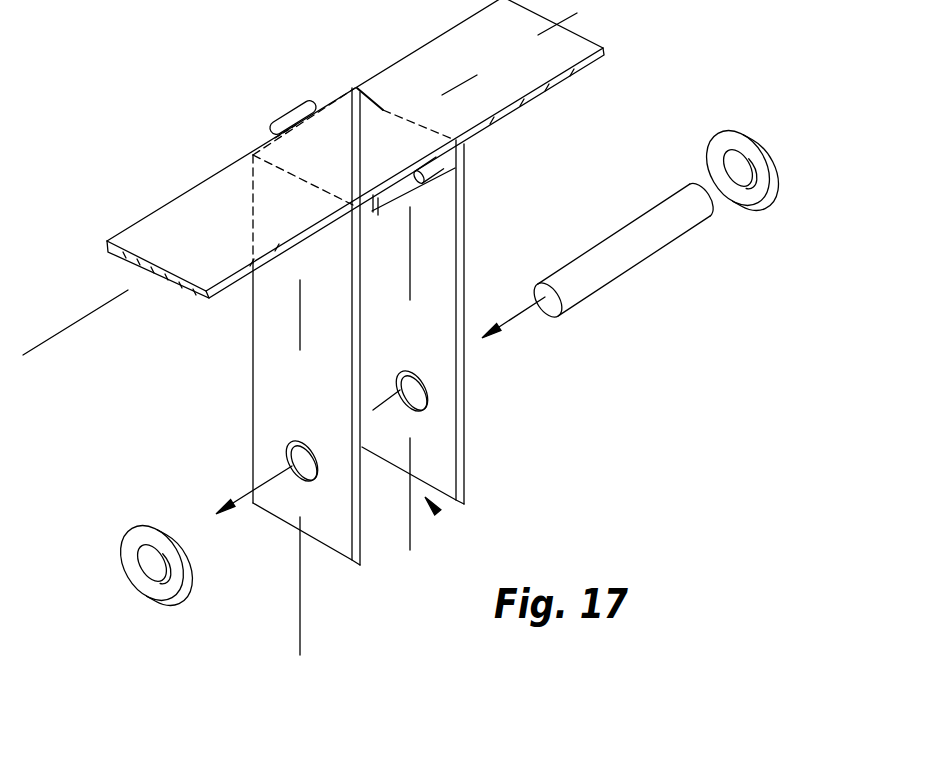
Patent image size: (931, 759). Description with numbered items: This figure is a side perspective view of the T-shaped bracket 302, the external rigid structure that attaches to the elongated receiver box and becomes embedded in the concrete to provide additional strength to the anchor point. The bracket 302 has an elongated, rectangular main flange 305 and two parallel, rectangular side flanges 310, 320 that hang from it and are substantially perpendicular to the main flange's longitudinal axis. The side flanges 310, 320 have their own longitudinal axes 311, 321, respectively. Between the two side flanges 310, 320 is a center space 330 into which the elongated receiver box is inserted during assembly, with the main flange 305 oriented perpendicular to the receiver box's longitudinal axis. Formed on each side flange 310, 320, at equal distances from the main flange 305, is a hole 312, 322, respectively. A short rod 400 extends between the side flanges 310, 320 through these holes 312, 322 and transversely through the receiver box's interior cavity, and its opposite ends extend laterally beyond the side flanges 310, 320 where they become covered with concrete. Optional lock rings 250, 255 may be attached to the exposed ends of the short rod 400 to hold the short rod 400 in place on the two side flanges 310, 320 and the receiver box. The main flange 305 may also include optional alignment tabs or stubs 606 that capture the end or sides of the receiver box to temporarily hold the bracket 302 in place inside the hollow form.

The T-shaped bracket 302 is at (195, 59).
The main flange 305 is at (148, 198).
The side flange 310 is at (251, 382).
The longitudinal axis 311 is at (296, 623).
The hole 312 is at (289, 452).
The side flange 320 is at (460, 250).
The longitudinal axis 321 is at (411, 537).
The hole 322 is at (428, 391).
The center space 330 is at (438, 512).
The short rod 400 is at (623, 272).
The lock ring 250 is at (133, 533).
The lock ring 255 is at (727, 133).
The alignment stub 606 is at (283, 120).